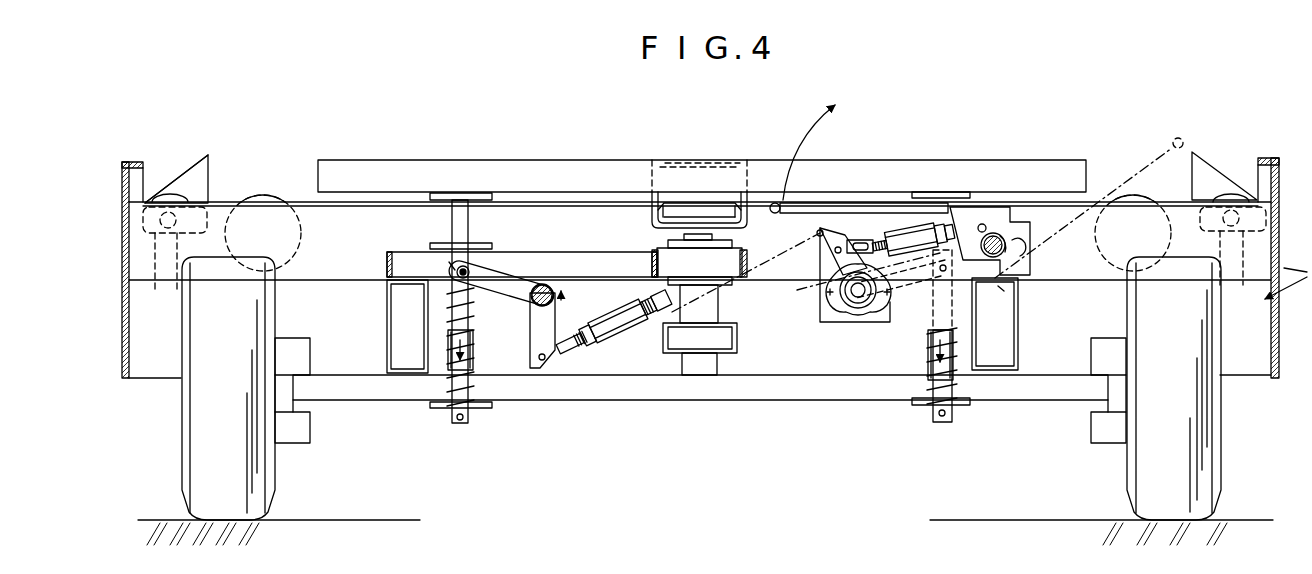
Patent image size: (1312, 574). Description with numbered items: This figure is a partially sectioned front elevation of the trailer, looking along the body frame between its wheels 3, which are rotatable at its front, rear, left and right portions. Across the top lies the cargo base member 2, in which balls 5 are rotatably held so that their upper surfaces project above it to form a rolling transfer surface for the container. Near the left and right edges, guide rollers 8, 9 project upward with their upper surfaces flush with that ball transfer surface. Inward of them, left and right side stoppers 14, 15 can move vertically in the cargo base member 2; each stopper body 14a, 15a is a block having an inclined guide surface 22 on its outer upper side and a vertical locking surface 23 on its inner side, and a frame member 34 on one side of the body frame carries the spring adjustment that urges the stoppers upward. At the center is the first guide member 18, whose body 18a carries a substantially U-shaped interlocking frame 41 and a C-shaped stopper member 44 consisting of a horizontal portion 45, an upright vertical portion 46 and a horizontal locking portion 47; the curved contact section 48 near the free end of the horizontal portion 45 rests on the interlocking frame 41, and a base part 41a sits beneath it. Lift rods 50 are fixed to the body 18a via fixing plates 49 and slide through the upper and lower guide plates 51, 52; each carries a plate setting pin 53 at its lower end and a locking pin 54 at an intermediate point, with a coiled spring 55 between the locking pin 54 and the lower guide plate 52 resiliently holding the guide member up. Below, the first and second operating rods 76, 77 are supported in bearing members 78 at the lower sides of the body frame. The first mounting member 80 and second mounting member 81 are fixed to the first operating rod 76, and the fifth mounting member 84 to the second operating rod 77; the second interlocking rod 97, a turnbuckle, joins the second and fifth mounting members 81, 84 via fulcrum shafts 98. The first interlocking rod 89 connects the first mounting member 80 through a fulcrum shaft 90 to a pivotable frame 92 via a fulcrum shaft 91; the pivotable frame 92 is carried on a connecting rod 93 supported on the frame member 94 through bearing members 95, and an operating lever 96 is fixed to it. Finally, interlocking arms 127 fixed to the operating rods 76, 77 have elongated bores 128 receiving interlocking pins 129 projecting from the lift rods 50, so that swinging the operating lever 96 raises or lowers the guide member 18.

The cargo base member 2 is at (342, 190).
The wheels 3 is at (195, 448).
The balls 5 is at (265, 194).
The guide roller 8 is at (152, 197).
The guide roller 9 is at (1252, 198).
The side stopper 14 is at (201, 169).
The side stopper body 14a is at (167, 187).
The side stopper 15 is at (1204, 167).
The side stopper body 15a is at (1247, 183).
The first guide member 18 is at (578, 158).
The guide member body 18a is at (535, 170).
The inclined guide surface 22 is at (182, 167).
The vertical locking surface 23 is at (209, 178).
The frame member 34 is at (386, 322).
The interlocking frame 41 is at (652, 210).
The cup base pedestal 41a is at (678, 229).
The stopper member 44 is at (700, 158).
The horizontal portion 45 is at (738, 200).
The vertical portion 46 is at (708, 195).
The horizontal locking portion 47 is at (683, 163).
The curved contact section 48 is at (680, 207).
The fixing plates 49 is at (438, 192).
The lift rods 50 is at (458, 207).
The upper guide plate 51 is at (460, 244).
The lower guide plate 52 is at (438, 409).
The plate setting pin 53 is at (462, 421).
The locking pin 54 is at (455, 295).
The coiled spring 55 is at (448, 348).
The first operating rod 76 is at (860, 296).
The second operating rod 77 is at (535, 299).
The bearing member 78 is at (845, 313).
The first mounting member 80 is at (840, 297).
The second mounting member 81 is at (854, 279).
The fifth mounting member 84 is at (557, 320).
The first interlocking rod 89 is at (903, 237).
The fulcrum shaft 90 is at (857, 250).
The fulcrum shaft 91 is at (994, 240).
The pivotable frame 92 is at (982, 224).
The connecting rod 93 is at (1006, 250).
The frame member 94 is at (1019, 330).
The bearing members 95 is at (1012, 242).
The operating lever 96 is at (838, 202).
The second interlocking rod 97 is at (625, 328).
The fulcrum shafts 98 is at (542, 368).
The interlocking arms 127 is at (513, 277).
The elongated bores 128 is at (467, 270).
The interlocking pins 129 is at (452, 266).